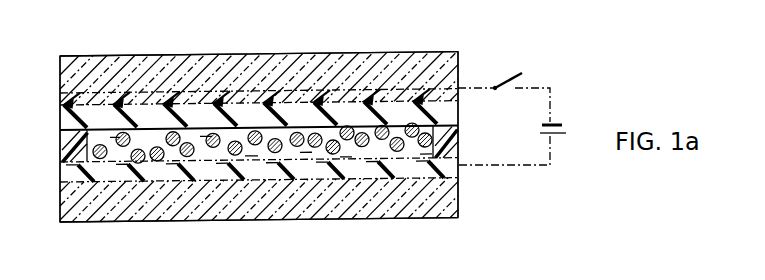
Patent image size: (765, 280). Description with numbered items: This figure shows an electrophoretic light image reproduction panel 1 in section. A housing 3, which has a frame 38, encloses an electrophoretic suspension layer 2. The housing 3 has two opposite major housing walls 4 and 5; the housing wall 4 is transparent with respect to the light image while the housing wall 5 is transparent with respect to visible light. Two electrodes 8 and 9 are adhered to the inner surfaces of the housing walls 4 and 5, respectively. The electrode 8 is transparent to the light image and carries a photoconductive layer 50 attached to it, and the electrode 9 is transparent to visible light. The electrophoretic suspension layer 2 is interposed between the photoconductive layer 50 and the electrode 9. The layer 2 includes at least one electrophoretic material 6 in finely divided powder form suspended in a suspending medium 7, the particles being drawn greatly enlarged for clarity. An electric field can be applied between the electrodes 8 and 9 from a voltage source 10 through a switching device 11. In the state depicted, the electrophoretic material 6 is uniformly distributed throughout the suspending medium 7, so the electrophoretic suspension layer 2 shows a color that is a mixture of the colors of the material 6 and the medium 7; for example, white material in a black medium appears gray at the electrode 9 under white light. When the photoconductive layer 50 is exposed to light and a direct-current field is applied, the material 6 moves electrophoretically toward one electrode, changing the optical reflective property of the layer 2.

The electrophoretic light image reproduction panel 1 is at (250, 48).
The electrophoretic suspension layer 2 is at (242, 166).
The housing 3 is at (60, 56).
The housing wall 4 is at (60, 67).
The housing wall 5 is at (66, 205).
The electrophoretic material 6 is at (146, 183).
The suspending medium 7 is at (203, 160).
The electrode 8 is at (63, 98).
The electrode 9 is at (62, 172).
The voltage source 10 is at (556, 124).
The switching device 11 is at (510, 78).
The frame 38 is at (62, 147).
The photoconductive layer 50 is at (68, 119).